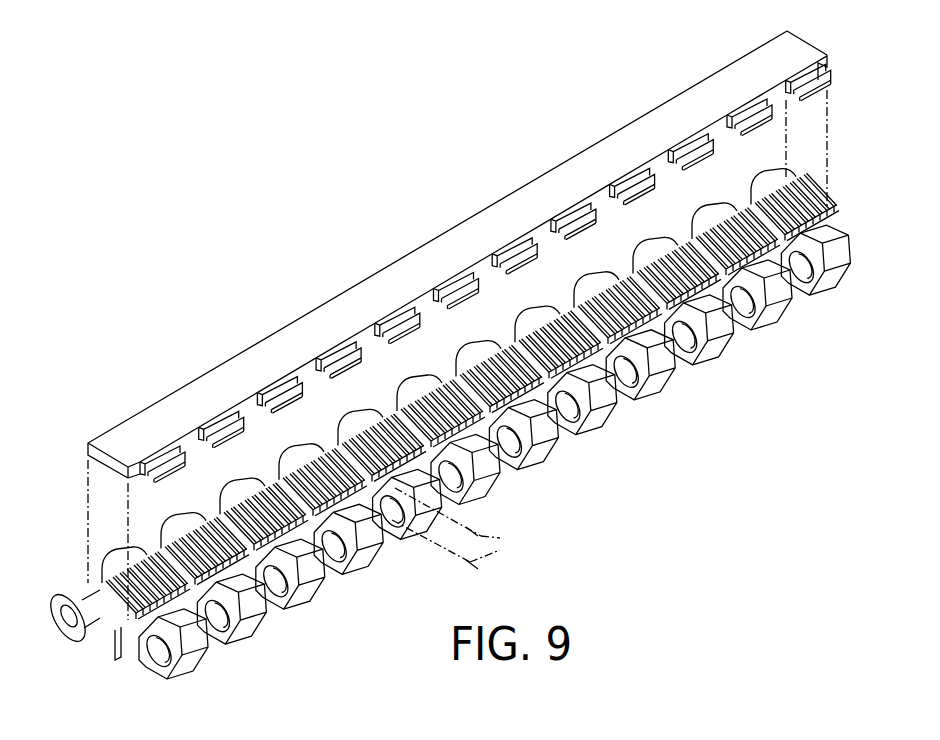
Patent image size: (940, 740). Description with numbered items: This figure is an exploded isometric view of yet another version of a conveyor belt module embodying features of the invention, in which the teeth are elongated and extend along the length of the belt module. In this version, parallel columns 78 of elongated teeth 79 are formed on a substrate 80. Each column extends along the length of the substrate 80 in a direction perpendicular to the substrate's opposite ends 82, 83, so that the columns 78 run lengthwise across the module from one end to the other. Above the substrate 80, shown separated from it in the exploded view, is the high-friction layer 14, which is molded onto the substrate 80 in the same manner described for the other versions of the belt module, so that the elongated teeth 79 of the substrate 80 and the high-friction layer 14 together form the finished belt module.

The high-friction layer 14 is at (431, 245).
The parallel columns 78 is at (505, 546).
The elongated teeth 79 is at (117, 606).
The substrate 80 is at (812, 205).
The opposite end 82 is at (604, 357).
The opposite end 83 is at (463, 373).